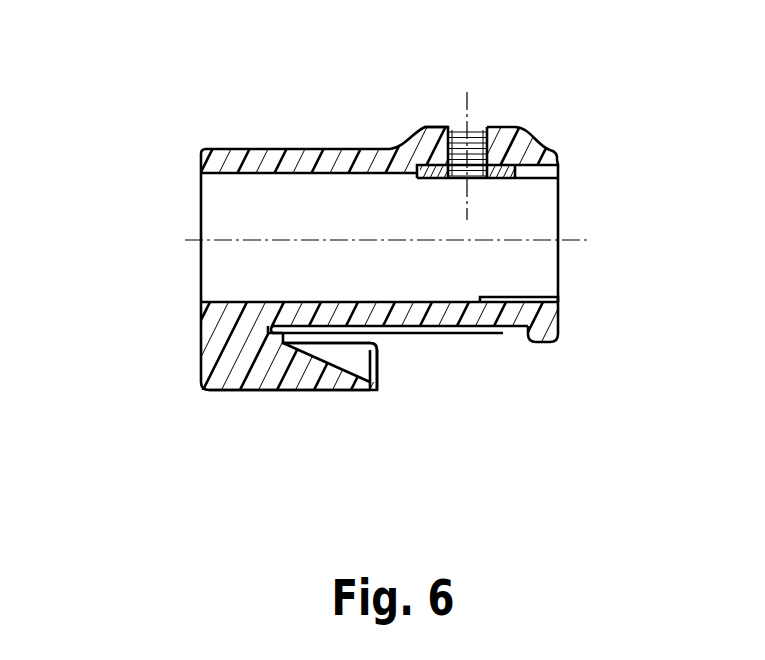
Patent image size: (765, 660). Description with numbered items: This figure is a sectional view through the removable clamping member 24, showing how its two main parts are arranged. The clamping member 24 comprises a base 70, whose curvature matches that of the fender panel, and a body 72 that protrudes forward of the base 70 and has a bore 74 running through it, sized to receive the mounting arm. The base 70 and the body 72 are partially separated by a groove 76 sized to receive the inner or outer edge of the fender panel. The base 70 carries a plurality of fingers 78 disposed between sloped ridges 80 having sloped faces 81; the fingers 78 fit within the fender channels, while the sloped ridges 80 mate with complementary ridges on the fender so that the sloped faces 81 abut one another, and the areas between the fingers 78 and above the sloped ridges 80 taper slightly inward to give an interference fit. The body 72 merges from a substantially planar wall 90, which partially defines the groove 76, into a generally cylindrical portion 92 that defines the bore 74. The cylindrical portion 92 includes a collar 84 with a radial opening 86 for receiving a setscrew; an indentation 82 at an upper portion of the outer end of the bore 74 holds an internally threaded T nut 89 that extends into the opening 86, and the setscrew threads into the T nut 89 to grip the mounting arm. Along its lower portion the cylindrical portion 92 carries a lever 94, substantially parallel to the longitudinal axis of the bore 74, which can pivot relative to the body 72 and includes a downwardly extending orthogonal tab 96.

The clamping member 24 is at (173, 135).
The base 70 is at (210, 395).
The body 72 is at (278, 148).
The bore 74 is at (429, 281).
The groove 76 is at (335, 334).
The fingers 78 is at (366, 361).
The sloped ridges 80 is at (287, 372).
The sloped faces 81 is at (350, 372).
The indentation 82 is at (524, 176).
The collar 84 is at (508, 128).
The radial opening 86 is at (452, 127).
The T nut 89 is at (484, 128).
The planar wall 90 is at (308, 309).
The cylindrical portion 92 is at (548, 153).
The lever 94 is at (520, 300).
The tab 96 is at (538, 345).